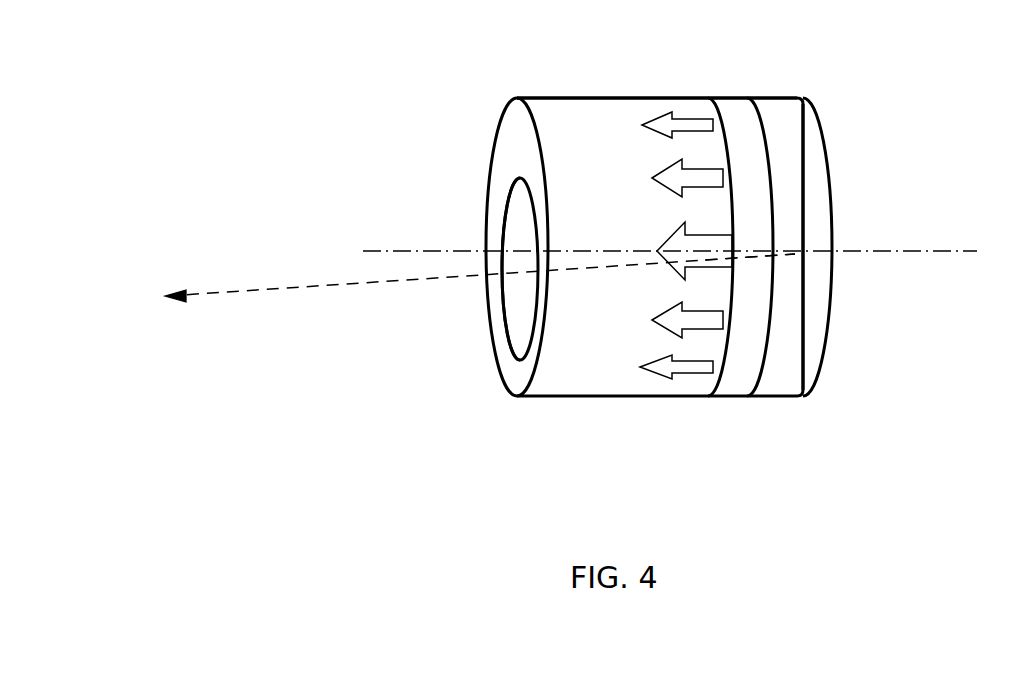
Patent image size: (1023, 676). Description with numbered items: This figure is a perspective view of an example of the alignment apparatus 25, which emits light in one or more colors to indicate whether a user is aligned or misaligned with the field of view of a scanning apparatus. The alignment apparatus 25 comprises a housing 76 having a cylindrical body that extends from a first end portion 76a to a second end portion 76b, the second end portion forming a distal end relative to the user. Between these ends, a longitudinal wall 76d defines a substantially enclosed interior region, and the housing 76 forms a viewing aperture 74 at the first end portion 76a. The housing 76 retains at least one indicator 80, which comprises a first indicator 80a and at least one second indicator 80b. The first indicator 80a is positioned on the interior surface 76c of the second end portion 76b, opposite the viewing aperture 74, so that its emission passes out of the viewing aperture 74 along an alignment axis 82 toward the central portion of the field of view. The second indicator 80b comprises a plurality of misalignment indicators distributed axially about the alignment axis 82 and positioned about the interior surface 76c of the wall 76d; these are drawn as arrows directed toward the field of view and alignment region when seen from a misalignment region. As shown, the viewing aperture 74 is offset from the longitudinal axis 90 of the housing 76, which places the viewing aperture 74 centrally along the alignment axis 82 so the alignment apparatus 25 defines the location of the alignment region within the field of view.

The alignment apparatus 25 is at (858, 113).
The viewing aperture 74 is at (492, 219).
The housing 76 is at (718, 155).
The first end portion 76a is at (528, 157).
The second end portion 76b is at (810, 347).
The interior surface 76c is at (525, 307).
The longitudinal wall 76d is at (630, 98).
The indicator 80 is at (725, 255).
The first indicator 80a is at (773, 258).
The second indicator 80b is at (670, 247).
The alignment axis 82 is at (297, 288).
The longitudinal axis 90 is at (380, 250).